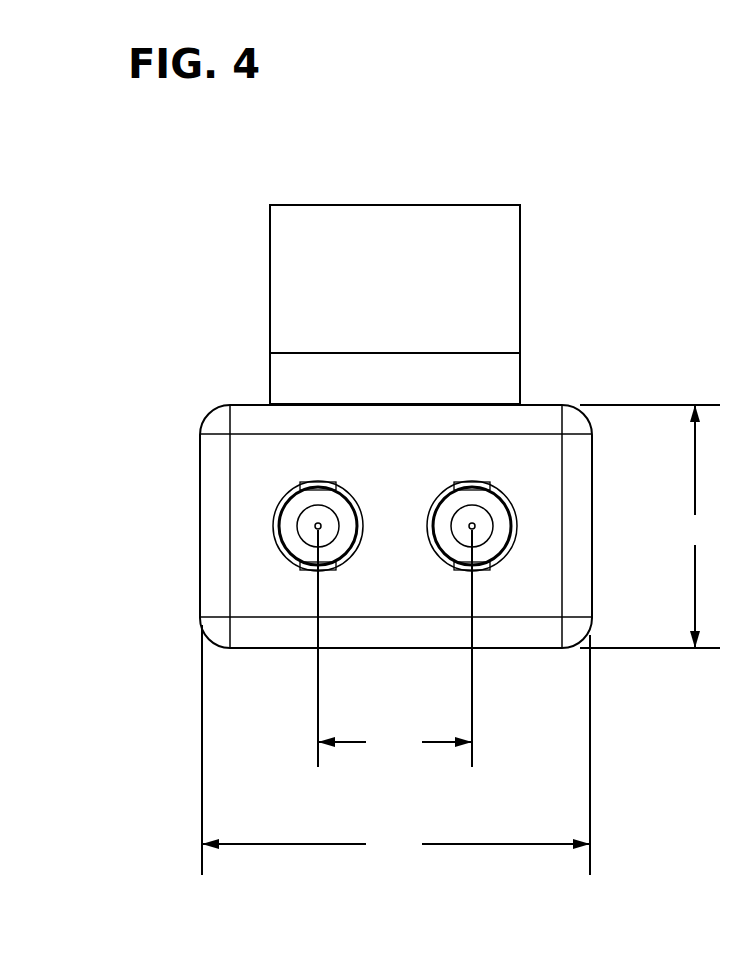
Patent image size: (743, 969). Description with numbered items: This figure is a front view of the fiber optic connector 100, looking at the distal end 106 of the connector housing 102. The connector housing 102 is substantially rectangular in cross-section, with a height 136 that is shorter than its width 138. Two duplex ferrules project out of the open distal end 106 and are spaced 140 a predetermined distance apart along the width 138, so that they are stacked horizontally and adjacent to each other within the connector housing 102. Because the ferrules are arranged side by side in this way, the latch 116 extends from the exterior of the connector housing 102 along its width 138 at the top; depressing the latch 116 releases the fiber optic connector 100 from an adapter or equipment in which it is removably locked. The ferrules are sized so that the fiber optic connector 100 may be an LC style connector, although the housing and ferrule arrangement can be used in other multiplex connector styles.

The fiber optic connector 100 is at (580, 161).
The connector housing 102 is at (543, 403).
The distal end 106 is at (542, 604).
The latch 116 is at (302, 203).
The height 136 is at (650, 526).
The width 138 is at (396, 750).
The spacing 140 is at (395, 648).